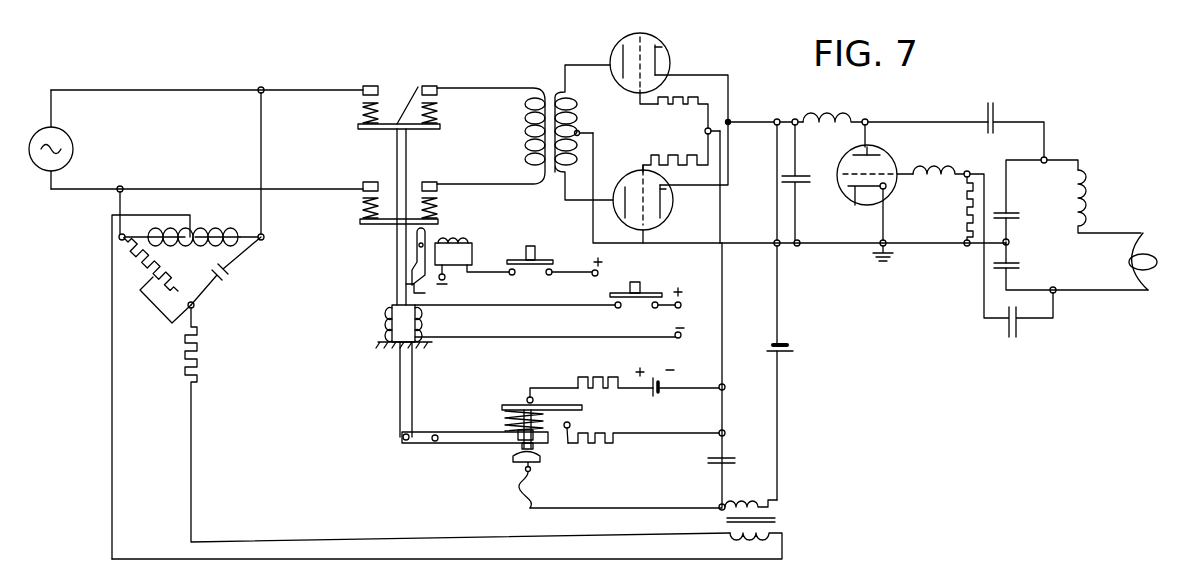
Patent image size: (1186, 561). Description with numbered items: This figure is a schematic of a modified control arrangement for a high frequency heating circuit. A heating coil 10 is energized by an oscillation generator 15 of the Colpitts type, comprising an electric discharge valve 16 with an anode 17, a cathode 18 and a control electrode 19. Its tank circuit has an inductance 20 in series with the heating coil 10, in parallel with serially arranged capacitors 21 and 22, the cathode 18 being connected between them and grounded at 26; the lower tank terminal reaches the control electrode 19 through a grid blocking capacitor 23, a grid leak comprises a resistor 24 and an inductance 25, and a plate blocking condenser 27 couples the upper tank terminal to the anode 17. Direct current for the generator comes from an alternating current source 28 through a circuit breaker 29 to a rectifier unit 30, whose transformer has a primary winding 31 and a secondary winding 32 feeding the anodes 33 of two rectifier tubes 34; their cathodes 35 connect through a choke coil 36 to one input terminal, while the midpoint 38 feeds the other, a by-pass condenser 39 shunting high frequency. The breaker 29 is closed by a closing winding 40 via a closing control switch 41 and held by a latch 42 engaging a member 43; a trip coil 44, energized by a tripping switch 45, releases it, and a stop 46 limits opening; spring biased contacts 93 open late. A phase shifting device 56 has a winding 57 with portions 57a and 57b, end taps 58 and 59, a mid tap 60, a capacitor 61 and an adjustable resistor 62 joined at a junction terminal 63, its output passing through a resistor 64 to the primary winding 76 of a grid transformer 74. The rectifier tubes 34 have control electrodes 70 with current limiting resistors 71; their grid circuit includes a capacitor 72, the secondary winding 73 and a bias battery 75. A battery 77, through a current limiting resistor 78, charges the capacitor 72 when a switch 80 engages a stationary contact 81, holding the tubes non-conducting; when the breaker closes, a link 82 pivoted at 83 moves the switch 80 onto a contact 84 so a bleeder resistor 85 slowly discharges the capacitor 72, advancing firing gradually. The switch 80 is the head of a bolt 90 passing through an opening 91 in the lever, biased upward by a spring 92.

The heating coil 10 is at (1149, 243).
The oscillation generator 15 is at (999, 161).
The electric discharge valve 16 is at (887, 158).
The anode 17 is at (854, 154).
The cathode 18 is at (858, 190).
The control electrode 19 is at (856, 173).
The inductance 20 is at (1088, 212).
The capacitor 21 is at (1017, 217).
The capacitor 22 is at (1017, 267).
The grid blocking capacitor 23 is at (1012, 336).
The resistor 24 is at (965, 220).
The inductance 25 is at (950, 164).
The ground 26 is at (876, 256).
The plate blocking condenser 27 is at (994, 110).
The alternating current source 28 is at (70, 143).
The circuit breaker 29 is at (399, 183).
The rectifier unit 30 is at (667, 135).
The primary winding 31 is at (527, 136).
The secondary winding 32 is at (578, 144).
The anodes 33 is at (612, 56).
The rectifier tubes 34 is at (652, 46).
The cathodes 35 is at (662, 50).
The choke coil 36 is at (835, 112).
The midpoint 38 is at (580, 131).
The by-pass condenser 39 is at (800, 184).
The closing winding 40 is at (391, 322).
The closing control switch 41 is at (643, 293).
The latch 42 is at (417, 256).
The member 43 is at (425, 296).
The trip coil 44 is at (466, 243).
The tripping switch 45 is at (536, 255).
The stop 46 is at (384, 347).
The phase shifting device 56 is at (192, 278).
The winding 57 is at (205, 220).
The winding portion 57a is at (164, 226).
The winding portion 57b is at (243, 210).
The end tap 58 is at (263, 235).
The end tap 59 is at (120, 238).
The mid tap 60 is at (190, 222).
The capacitor 61 is at (230, 272).
The adjustable resistor 62 is at (150, 286).
The junction terminal 63 is at (194, 306).
The resistor 64 is at (198, 356).
The control electrodes 70 is at (632, 40).
The current limiting resistor 71 is at (706, 98).
The capacitor 72 is at (736, 458).
The secondary winding 73 is at (762, 500).
The grid transformer 74 is at (777, 520).
The bias battery 75 is at (780, 345).
The primary winding 76 is at (772, 540).
The battery 77 is at (659, 397).
The current limiting resistor 78 is at (613, 379).
The switch 80 is at (508, 406).
The stationary contact 81 is at (530, 396).
The link 82 is at (468, 444).
The pivot 83 is at (435, 442).
The contact 84 is at (571, 424).
The bleeder resistor 85 is at (610, 448).
The bolt 90 is at (536, 452).
The opening 91 is at (520, 441).
The spring 92 is at (504, 420).
The spring biased contacts 93 is at (363, 104).